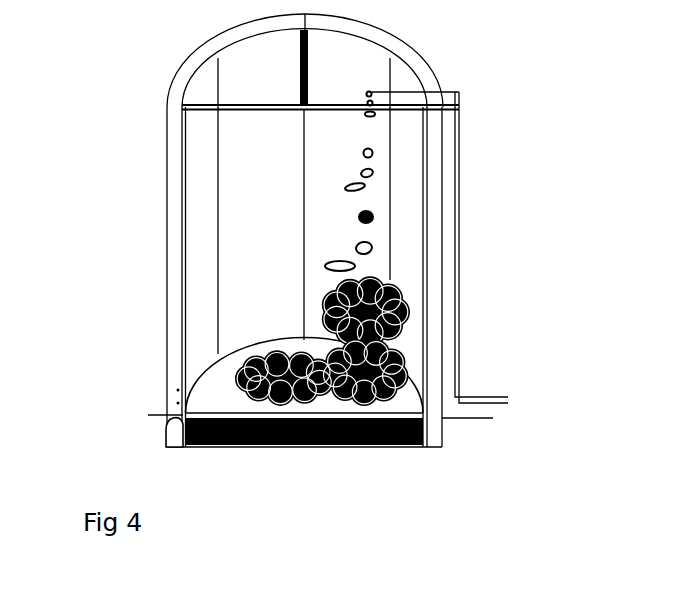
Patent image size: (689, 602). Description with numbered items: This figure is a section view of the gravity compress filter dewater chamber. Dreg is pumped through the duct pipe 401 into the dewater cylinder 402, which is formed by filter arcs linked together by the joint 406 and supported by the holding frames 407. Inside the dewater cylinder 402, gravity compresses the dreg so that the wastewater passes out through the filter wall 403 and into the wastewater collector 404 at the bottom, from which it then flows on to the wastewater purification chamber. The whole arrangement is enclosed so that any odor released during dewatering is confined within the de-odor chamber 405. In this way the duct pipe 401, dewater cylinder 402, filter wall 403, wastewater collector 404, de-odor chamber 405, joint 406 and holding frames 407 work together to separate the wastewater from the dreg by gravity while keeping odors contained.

The duct pipe 401 is at (460, 107).
The dewater cylinder 402 is at (395, 308).
The filter wall 403 is at (425, 353).
The wastewater collector 404 is at (167, 433).
The de-odor chamber 405 is at (167, 262).
The joint 406 is at (218, 89).
The holding frame 407 is at (300, 57).